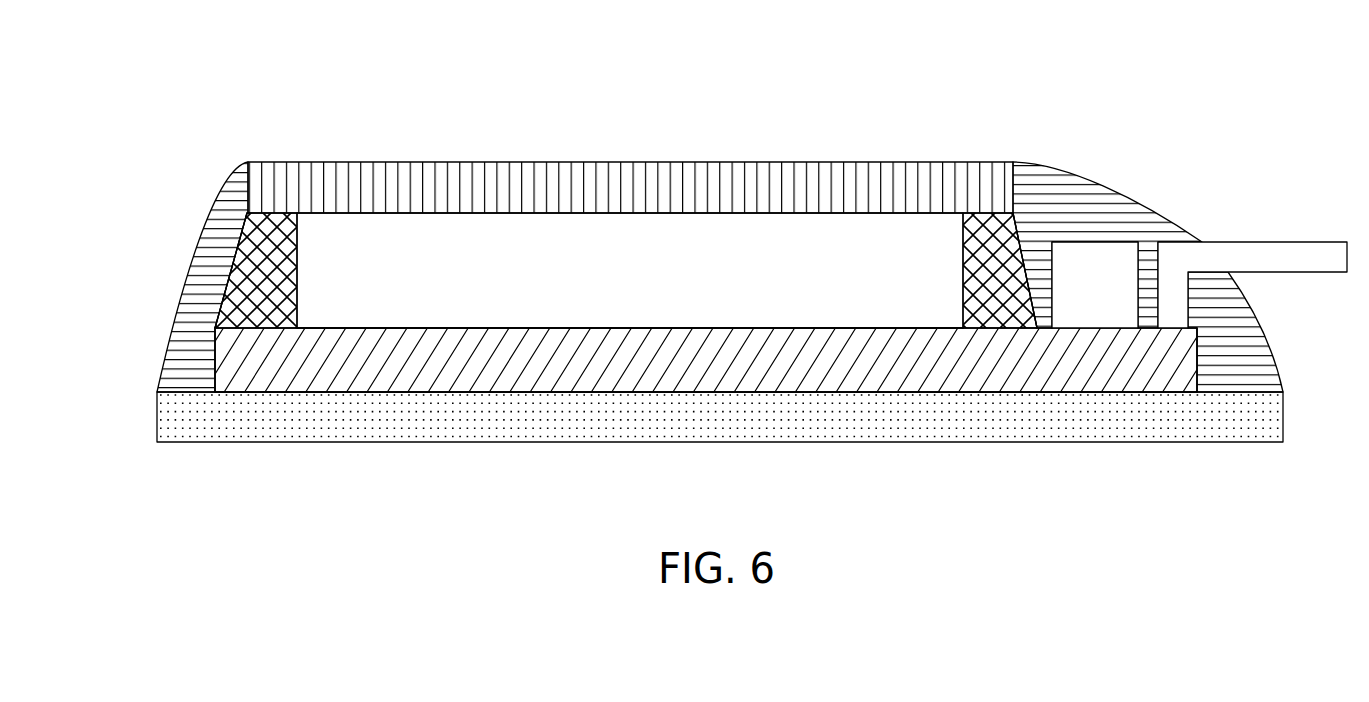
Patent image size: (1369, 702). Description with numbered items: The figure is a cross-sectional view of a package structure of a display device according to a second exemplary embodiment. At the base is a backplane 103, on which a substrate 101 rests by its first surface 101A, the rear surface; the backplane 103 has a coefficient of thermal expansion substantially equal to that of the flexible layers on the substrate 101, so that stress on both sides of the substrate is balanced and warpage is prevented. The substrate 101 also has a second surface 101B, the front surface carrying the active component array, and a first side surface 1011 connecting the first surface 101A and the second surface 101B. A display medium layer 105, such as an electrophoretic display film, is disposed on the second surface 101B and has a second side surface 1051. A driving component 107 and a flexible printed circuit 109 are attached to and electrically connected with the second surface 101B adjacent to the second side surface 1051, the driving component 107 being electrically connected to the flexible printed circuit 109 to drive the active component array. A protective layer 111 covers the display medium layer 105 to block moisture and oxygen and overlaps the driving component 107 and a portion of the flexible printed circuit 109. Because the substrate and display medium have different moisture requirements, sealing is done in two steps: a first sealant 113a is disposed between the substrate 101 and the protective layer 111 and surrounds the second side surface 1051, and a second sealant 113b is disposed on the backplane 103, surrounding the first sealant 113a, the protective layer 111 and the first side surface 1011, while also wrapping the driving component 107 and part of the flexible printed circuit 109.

The substrate 101 is at (763, 367).
The first surface 101A is at (413, 390).
The second surface 101B is at (413, 328).
The first side surface 1011 is at (215, 358).
The backplane 103 is at (1247, 415).
The display medium layer 105 is at (598, 265).
The second side surface 1051 is at (250, 260).
The driving component 107 is at (1107, 265).
The flexible printed circuit 109 is at (1288, 252).
The protective layer 111 is at (758, 177).
The first sealant 113a is at (212, 290).
The second sealant 113b is at (212, 290).